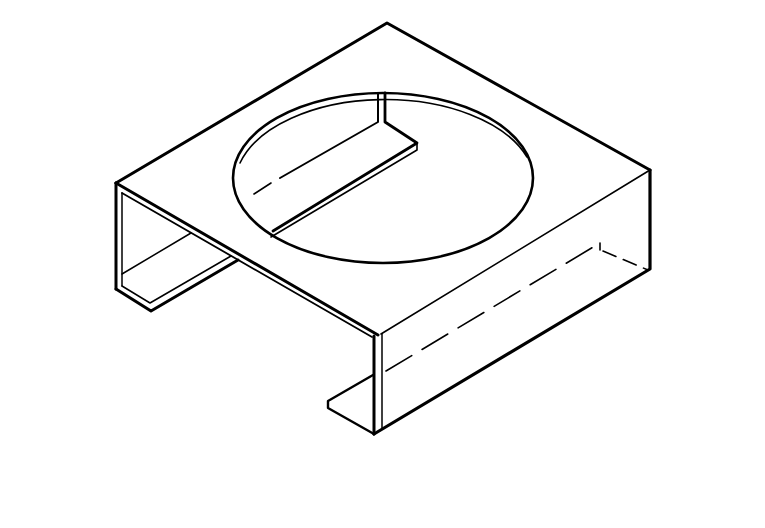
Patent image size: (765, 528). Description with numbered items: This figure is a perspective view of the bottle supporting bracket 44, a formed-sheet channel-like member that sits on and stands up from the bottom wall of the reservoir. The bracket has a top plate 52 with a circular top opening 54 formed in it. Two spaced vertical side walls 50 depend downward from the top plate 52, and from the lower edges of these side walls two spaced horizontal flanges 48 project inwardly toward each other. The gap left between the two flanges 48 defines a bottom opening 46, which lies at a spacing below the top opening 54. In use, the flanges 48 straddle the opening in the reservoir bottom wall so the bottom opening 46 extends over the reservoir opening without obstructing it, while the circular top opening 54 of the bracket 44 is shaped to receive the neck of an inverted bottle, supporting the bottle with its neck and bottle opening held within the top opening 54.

The bottle supporting bracket 44 is at (552, 97).
The bottom opening 46 is at (282, 339).
The horizontal flanges 48 is at (137, 292).
The vertical side walls 50 is at (127, 221).
The top plate 52 is at (414, 59).
The circular top opening 54 is at (423, 222).